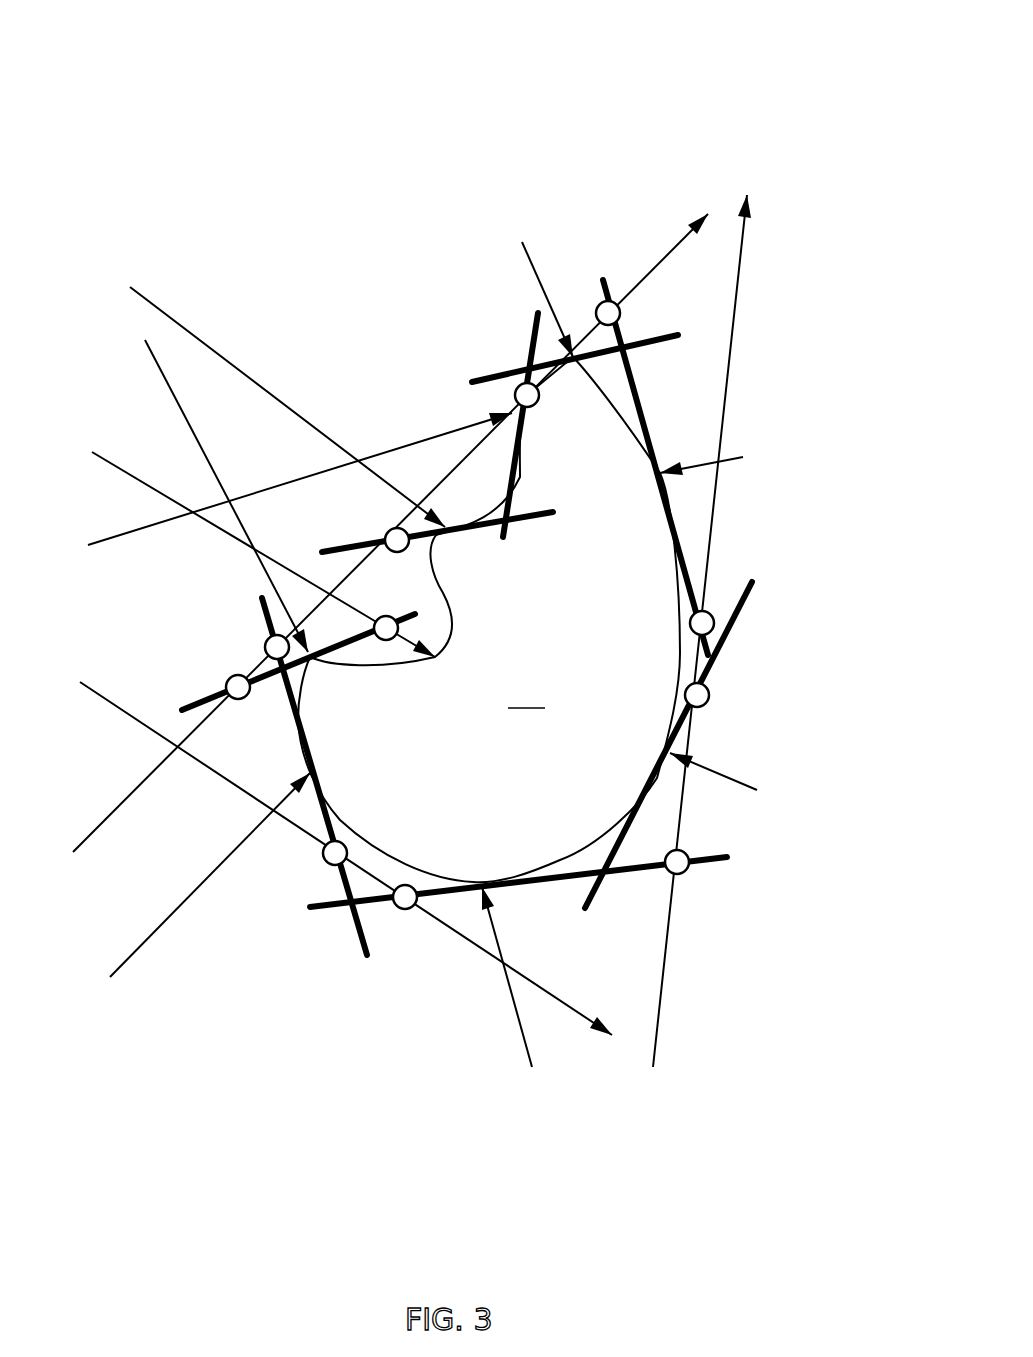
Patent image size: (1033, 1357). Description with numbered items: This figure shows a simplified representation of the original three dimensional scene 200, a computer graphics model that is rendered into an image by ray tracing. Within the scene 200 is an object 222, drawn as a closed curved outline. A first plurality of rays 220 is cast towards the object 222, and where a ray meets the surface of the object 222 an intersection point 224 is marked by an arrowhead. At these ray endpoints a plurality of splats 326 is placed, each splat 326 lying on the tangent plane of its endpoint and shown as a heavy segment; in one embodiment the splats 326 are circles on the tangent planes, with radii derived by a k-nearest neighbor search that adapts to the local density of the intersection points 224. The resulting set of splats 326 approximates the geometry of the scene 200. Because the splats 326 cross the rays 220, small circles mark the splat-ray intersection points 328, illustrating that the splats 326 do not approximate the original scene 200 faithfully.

The original three dimensional scene 200 is at (88, 92).
The first plurality of rays 220 is at (683, 242).
The object 222 is at (489, 619).
The intersection points 224 is at (670, 468).
The splats 326 is at (633, 362).
The splat-ray intersection points 328 is at (622, 315).